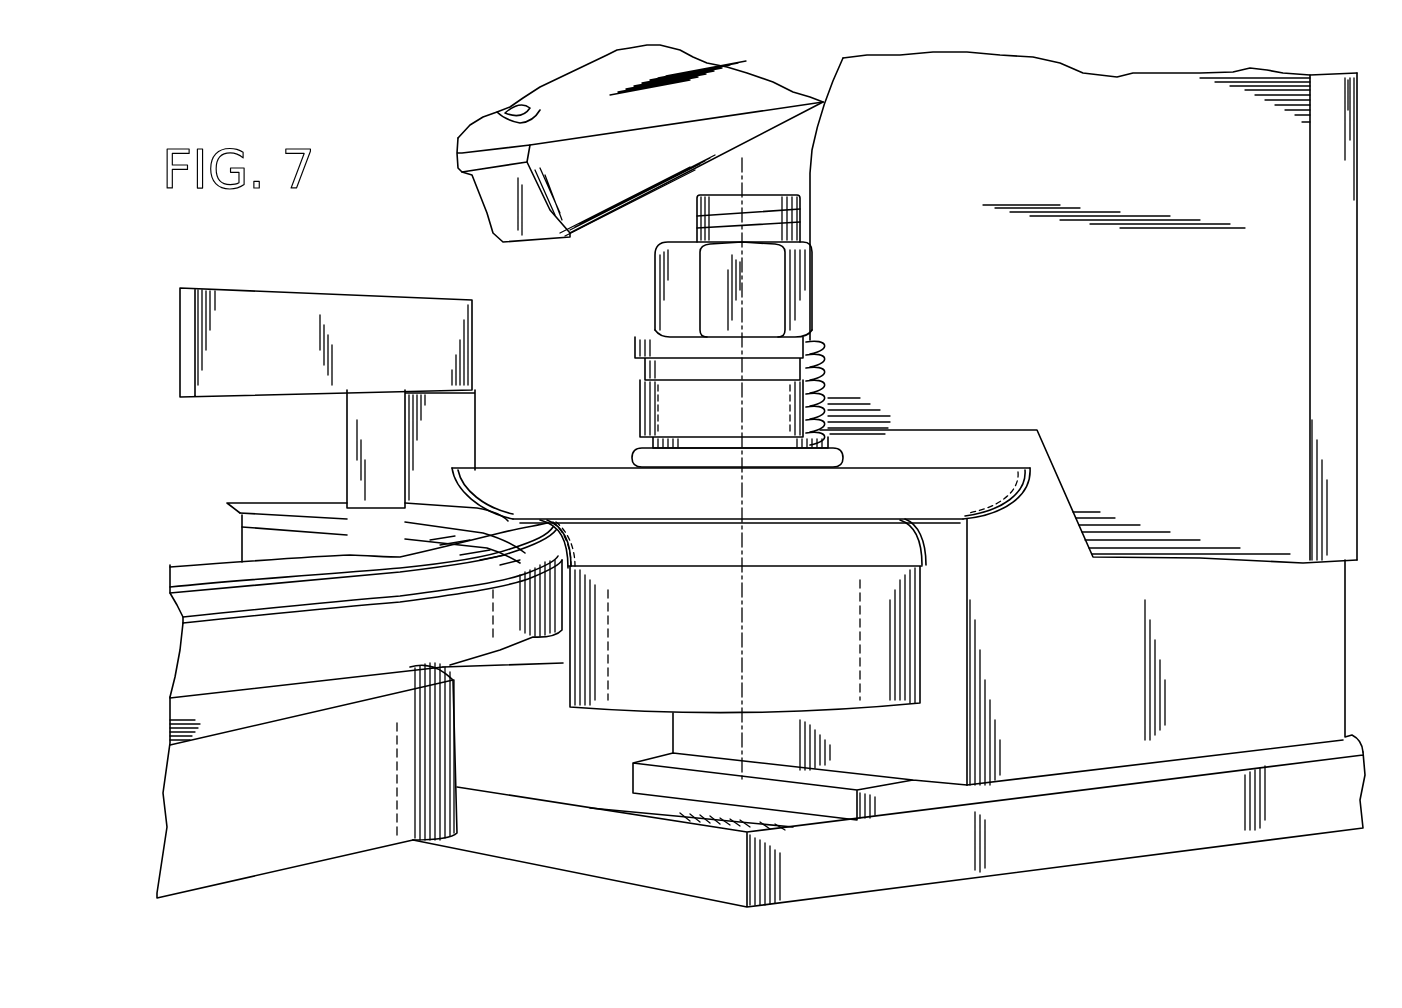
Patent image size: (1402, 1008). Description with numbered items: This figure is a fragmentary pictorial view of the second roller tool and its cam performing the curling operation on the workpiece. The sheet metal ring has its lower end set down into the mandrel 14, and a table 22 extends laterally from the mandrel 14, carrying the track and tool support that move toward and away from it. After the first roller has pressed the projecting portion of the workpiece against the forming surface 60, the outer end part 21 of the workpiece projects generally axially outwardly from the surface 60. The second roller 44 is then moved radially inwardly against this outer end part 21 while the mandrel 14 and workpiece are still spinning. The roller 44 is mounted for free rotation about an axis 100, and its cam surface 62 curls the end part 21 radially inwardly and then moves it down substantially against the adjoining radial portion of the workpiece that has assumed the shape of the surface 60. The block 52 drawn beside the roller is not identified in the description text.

The mandrel 14 is at (463, 637).
The outer end part 21 is at (200, 580).
The table 22 is at (537, 783).
The second roller 44 is at (577, 485).
The housing block 52 is at (1060, 274).
The forming surface 60 is at (275, 598).
The cam surface 62 is at (827, 503).
The axis 100 is at (742, 600).